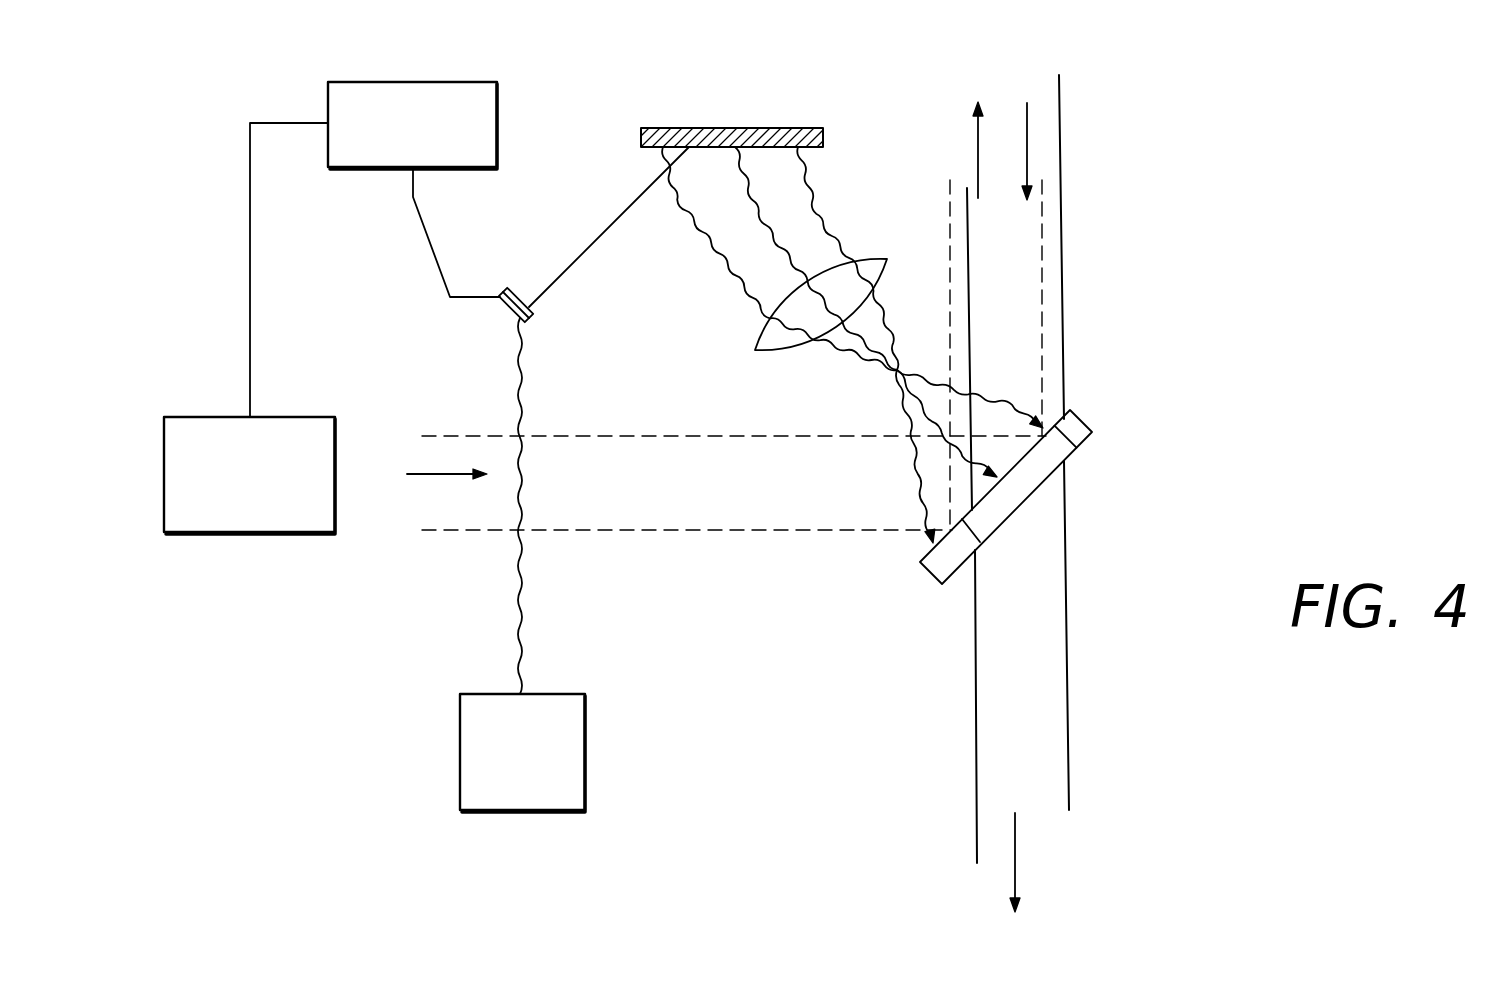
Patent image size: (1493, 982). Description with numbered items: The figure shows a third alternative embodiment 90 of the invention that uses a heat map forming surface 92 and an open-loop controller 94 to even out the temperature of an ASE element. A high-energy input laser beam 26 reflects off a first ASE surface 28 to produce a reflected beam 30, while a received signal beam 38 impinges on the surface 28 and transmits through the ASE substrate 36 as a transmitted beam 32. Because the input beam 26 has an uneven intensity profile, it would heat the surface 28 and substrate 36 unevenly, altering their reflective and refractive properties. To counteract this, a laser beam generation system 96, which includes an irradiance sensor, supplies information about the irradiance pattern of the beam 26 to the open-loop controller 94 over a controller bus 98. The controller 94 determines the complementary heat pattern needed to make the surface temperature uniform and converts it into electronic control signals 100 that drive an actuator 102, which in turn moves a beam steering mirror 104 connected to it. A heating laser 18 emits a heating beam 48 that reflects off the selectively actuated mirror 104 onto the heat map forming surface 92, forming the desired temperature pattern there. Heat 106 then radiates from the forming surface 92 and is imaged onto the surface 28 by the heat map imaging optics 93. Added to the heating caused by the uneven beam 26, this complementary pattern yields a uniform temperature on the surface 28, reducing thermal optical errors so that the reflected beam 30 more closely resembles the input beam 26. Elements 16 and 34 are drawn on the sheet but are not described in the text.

The optical fiber preform 16 is at (1095, 393).
The heating laser 18 is at (522, 812).
The input laser beam 26 is at (423, 490).
The first ASE surface 28 is at (923, 545).
The reflected beam 30 is at (975, 153).
The transmitted beam 32 is at (1013, 865).
The lower end of preform 34 is at (950, 582).
The ASE substrate 36 is at (1087, 427).
The received signal beam 38 is at (1030, 145).
The heating beam 48 is at (527, 641).
The third alternative embodiment 90 is at (1306, 212).
The heat map forming surface 92 is at (702, 127).
The heat map imaging optics 93 is at (755, 347).
The open-loop controller 94 is at (498, 130).
The laser beam generation system 96 is at (233, 533).
The controller bus 98 is at (270, 121).
The electronic control signals 100 is at (427, 230).
The actuator 102 is at (525, 290).
The beam steering mirror 104 is at (508, 324).
The heat 106 is at (851, 195).